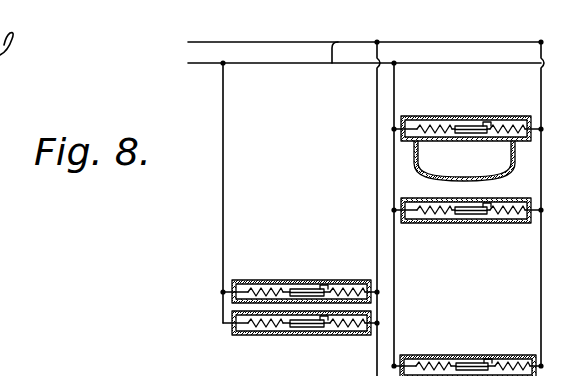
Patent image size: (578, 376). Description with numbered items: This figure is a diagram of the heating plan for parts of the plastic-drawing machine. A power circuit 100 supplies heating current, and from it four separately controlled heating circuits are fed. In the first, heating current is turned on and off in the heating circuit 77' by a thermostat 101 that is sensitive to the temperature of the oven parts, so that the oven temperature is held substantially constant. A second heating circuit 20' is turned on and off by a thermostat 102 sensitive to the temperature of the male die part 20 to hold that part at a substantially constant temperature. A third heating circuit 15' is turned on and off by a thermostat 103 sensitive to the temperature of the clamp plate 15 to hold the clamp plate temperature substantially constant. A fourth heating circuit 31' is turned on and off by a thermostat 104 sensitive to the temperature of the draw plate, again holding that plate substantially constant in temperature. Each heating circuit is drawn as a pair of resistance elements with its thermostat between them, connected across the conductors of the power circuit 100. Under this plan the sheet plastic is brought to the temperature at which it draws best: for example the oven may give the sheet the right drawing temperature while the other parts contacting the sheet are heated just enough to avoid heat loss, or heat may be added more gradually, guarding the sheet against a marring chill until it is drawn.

The power circuit 100 is at (330, 64).
The thermostat 101 is at (296, 287).
The thermostat 102 is at (462, 122).
The thermostat 103 is at (465, 205).
The thermostat 104 is at (463, 353).
The male die part 20 is at (464, 161).
The clamp plate 15 is at (469, 233).
The heating circuit 20' is at (467, 116).
The heating circuit 15' is at (467, 225).
The heating circuit 31' is at (467, 354).
The heating circuit 77' is at (278, 312).